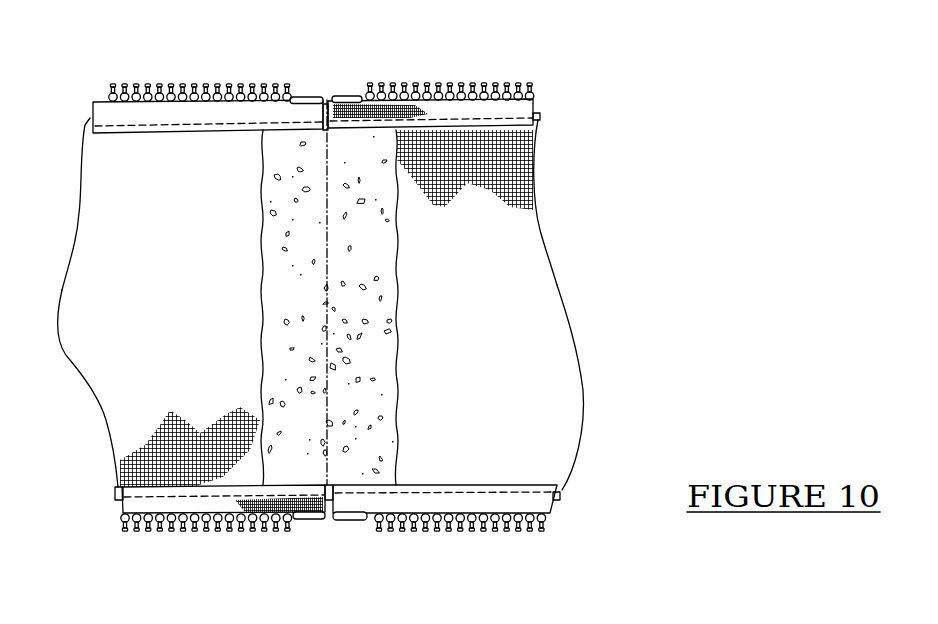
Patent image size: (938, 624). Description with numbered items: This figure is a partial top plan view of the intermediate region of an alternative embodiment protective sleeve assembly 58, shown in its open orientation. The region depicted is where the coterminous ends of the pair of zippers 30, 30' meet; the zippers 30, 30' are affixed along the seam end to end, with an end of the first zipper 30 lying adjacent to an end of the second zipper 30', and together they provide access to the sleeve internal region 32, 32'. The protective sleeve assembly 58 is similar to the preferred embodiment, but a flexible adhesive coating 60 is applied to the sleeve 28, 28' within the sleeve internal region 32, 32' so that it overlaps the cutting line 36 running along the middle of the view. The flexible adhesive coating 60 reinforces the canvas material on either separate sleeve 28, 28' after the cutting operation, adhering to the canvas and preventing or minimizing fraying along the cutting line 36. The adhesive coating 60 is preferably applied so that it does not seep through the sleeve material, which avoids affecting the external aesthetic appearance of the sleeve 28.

The separate sleeve 28' is at (71, 204).
The sleeve 28 is at (496, 202).
The second zipper 30' is at (208, 88).
The first zipper 30 is at (434, 83).
The sleeve internal region 32' is at (146, 388).
The sleeve internal region 32 is at (589, 387).
The cutting line 36 is at (343, 178).
The protective sleeve assembly 58 is at (281, 58).
The flexible adhesive coating 60 is at (352, 252).